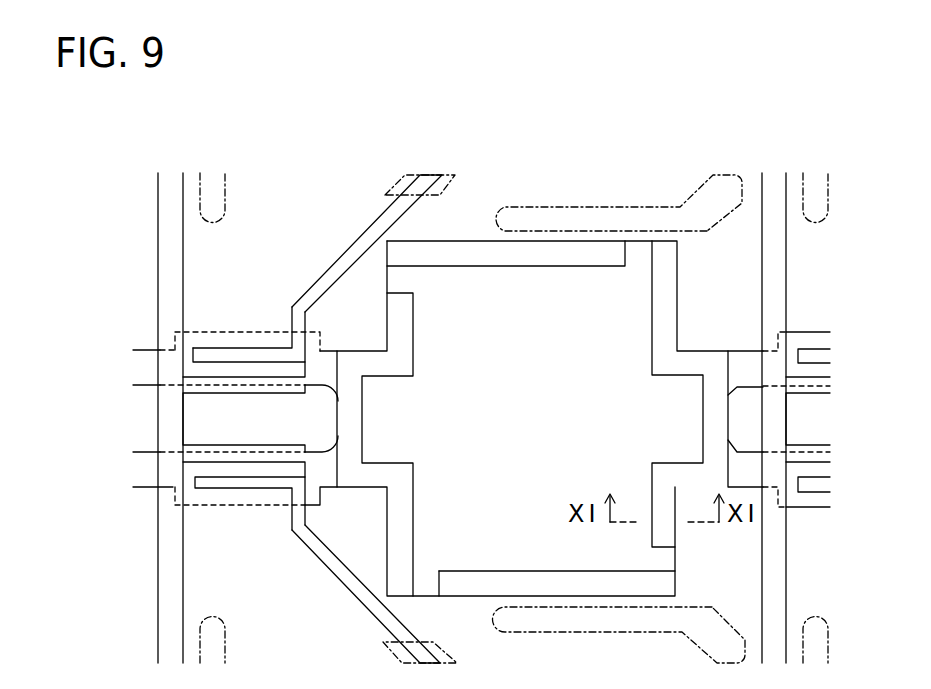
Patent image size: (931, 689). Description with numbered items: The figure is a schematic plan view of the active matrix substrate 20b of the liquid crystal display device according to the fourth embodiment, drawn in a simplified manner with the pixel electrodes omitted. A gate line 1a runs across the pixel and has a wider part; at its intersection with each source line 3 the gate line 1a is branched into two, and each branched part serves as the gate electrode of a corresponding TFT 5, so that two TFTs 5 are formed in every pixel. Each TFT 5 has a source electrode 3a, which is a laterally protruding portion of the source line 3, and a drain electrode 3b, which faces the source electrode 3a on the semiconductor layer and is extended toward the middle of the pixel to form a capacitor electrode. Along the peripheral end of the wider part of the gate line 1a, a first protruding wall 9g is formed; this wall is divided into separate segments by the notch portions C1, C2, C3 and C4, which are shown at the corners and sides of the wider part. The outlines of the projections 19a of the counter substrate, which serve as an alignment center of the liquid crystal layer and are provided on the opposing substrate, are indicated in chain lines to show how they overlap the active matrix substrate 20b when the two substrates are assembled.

The active matrix substrate 20b is at (193, 149).
The source line 3 is at (166, 624).
The source electrode 3a is at (244, 446).
The drain electrode 3b is at (343, 572).
The TFT 5 is at (230, 326).
The gate line 1a is at (498, 418).
The first protruding wall 9g is at (650, 405).
The projection 19a is at (227, 647).
The notch portion C1 is at (636, 255).
The notch portion C2 is at (668, 560).
The notch portion C3 is at (423, 592).
The notch portion C4 is at (402, 283).